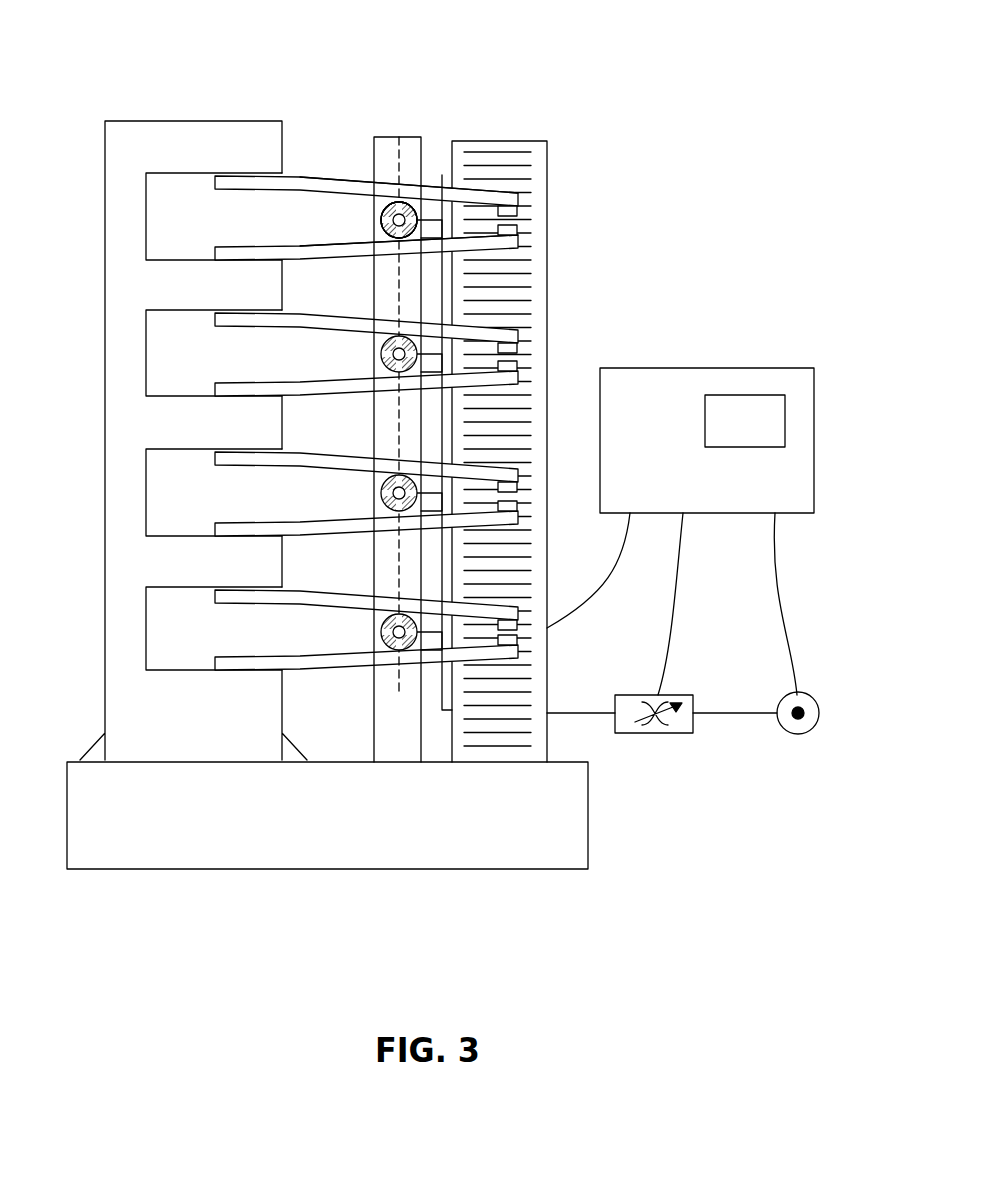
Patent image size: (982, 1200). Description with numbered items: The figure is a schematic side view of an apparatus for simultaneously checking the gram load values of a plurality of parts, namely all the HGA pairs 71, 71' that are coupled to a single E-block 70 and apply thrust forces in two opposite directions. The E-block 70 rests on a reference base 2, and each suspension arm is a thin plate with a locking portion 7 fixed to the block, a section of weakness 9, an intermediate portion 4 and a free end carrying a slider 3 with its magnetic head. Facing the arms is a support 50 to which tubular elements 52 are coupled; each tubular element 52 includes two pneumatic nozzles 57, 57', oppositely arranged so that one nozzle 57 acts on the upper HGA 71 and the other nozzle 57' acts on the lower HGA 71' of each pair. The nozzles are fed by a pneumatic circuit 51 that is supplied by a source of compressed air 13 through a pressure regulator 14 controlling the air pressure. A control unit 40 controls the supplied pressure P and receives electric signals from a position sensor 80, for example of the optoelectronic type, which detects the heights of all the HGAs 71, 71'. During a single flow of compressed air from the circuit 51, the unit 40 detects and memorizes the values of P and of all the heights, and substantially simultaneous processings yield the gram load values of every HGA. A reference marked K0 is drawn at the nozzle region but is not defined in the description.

The reference base 2 is at (570, 832).
The slider 3 is at (517, 211).
The intermediate portion 4 is at (404, 203).
The locking portion 7 is at (242, 178).
The section of weakness 9 is at (326, 183).
The source of compressed air 13 is at (808, 728).
The pressure regulator 14 is at (680, 728).
The unit 40 is at (699, 377).
The support 50 is at (396, 148).
The pneumatic circuit 51 is at (737, 724).
The tubular elements 52 is at (442, 180).
The pneumatic nozzle 57 is at (376, 331).
The pneumatic nozzle 57' is at (363, 218).
The E-block 70 is at (158, 135).
The HGA 71 is at (366, 349).
The HGA 71' is at (355, 434).
The position sensor 80 is at (544, 158).
The reference point K0 is at (401, 203).